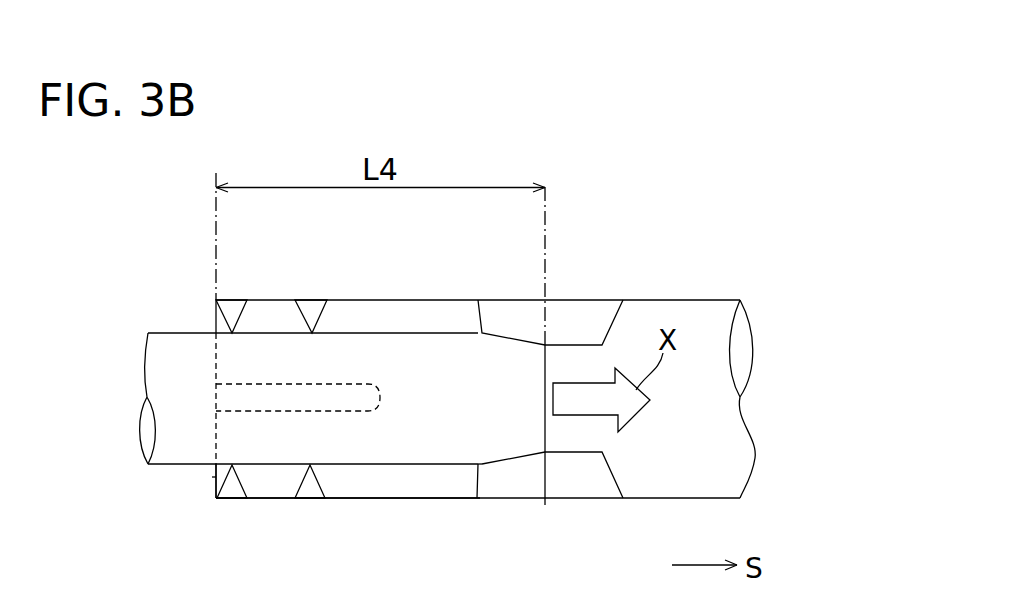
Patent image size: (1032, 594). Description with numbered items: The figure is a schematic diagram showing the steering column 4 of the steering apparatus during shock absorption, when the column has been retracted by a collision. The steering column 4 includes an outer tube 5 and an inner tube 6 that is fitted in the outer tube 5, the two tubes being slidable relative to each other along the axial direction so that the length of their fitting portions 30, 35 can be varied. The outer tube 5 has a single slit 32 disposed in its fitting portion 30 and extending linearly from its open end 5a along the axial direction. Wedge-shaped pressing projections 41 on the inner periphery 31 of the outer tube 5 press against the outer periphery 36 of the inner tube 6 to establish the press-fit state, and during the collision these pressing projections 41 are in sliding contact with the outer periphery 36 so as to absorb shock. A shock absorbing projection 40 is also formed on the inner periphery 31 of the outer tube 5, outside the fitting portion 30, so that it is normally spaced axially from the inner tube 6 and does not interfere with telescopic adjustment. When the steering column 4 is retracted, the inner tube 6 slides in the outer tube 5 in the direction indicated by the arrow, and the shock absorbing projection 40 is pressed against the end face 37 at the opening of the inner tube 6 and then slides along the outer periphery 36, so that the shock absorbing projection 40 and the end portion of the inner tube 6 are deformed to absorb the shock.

The steering column 4 is at (643, 235).
The outer tube 5 is at (668, 302).
The open end 5a is at (212, 477).
The inner tube 6 is at (163, 332).
The fitting portion 30 is at (403, 498).
The inner periphery 31 is at (660, 493).
The slit 32 is at (232, 387).
The fitting portion 35 is at (280, 467).
The outer periphery 36 is at (162, 467).
The end face 37 is at (560, 440).
The shock absorbing projection 40 is at (577, 307).
The pressing projection 41 is at (312, 300).